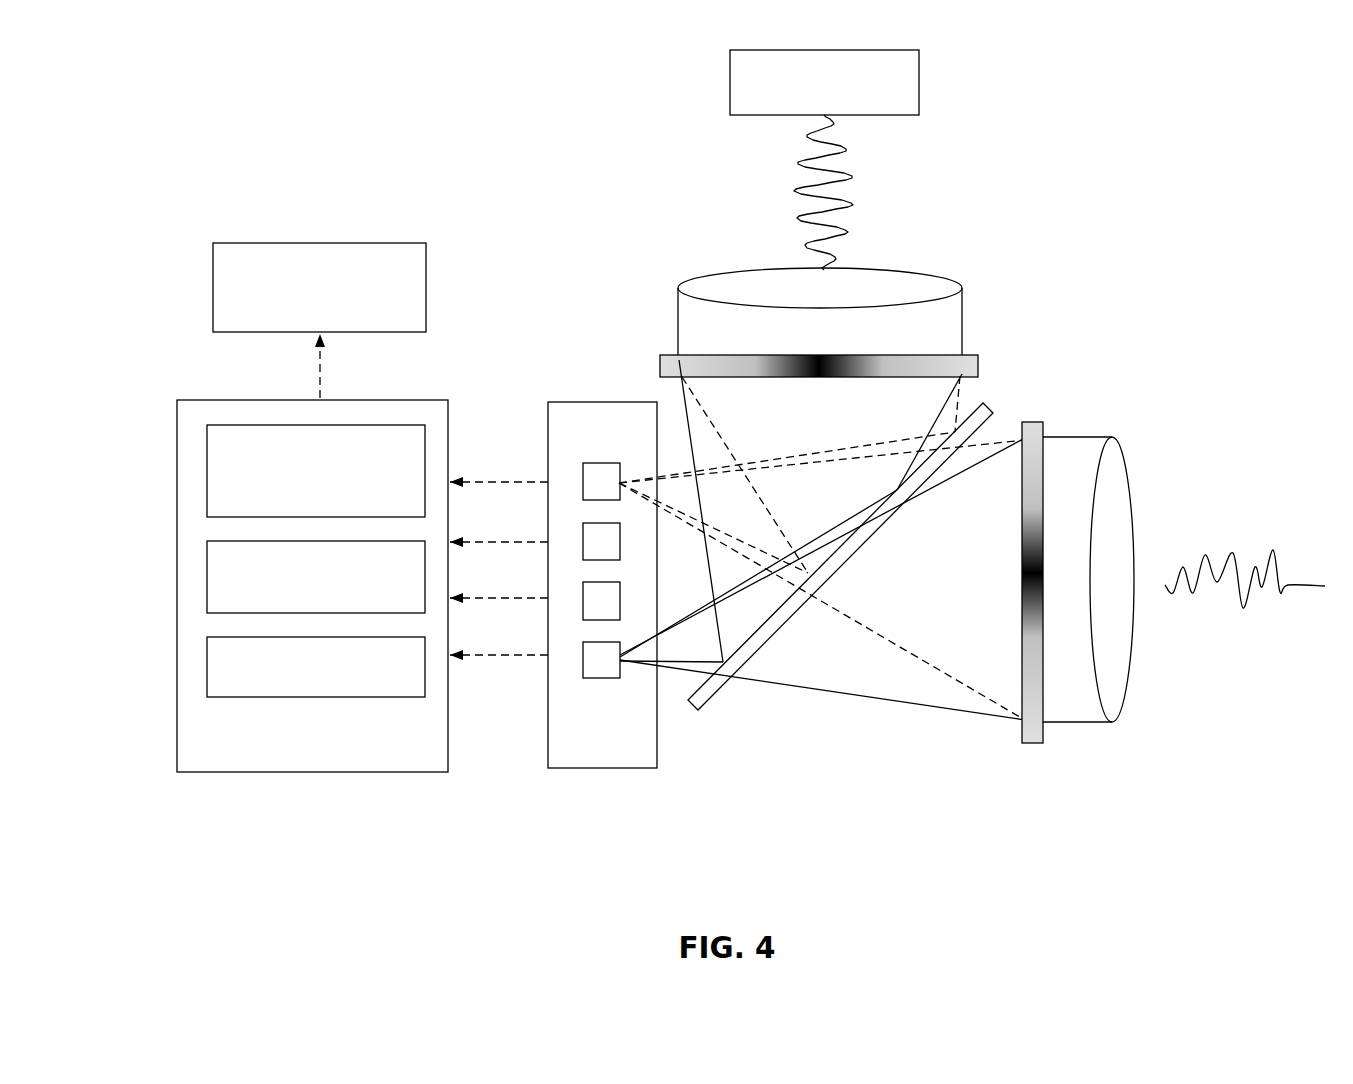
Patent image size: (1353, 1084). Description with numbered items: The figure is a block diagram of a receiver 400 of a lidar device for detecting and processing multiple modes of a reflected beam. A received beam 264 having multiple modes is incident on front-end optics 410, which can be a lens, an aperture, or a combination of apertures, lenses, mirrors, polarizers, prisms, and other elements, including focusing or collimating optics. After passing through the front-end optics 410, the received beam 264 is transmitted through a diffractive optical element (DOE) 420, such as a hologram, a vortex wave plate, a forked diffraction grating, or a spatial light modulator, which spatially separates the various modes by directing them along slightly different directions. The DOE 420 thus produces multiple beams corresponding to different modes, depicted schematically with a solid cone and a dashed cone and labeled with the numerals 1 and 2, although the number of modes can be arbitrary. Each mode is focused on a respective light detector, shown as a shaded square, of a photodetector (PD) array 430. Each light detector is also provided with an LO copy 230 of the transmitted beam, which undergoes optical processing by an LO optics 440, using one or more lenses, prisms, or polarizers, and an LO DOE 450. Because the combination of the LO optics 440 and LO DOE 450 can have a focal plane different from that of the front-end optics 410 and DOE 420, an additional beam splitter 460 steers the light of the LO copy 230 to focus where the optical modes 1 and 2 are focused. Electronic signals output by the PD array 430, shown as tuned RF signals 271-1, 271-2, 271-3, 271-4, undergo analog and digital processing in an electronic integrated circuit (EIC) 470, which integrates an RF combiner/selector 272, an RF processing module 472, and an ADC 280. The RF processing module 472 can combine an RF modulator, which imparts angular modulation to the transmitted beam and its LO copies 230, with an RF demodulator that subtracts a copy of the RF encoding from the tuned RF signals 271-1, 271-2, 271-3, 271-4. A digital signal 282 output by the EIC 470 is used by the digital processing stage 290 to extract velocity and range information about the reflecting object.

The receiver 400 is at (190, 92).
The LO copy 230 is at (857, 93).
The LO optics 440 is at (650, 282).
The LO DOE 450 is at (645, 365).
The beam splitter 460 is at (713, 720).
The diffractive optical element 420 is at (1034, 757).
The front-end optics 410 is at (1112, 400).
The received beam 264 is at (1209, 540).
The photodetector array 430 is at (587, 754).
The tuned RF signal 271-1 is at (499, 469).
The tuned RF signal 271-2 is at (499, 529).
The tuned RF signal 271-3 is at (499, 587).
The tuned RF signal 271-4 is at (499, 642).
The electronic integrated circuit 470 is at (297, 759).
The RF combiner/selector 272 is at (300, 494).
The RF processing module 472 is at (300, 601).
The ADC 280 is at (357, 676).
The digital processing stage 290 is at (304, 311).
The digital signal 282 is at (300, 366).
The optical mode 1 is at (917, 523).
The optical mode 2 is at (917, 598).